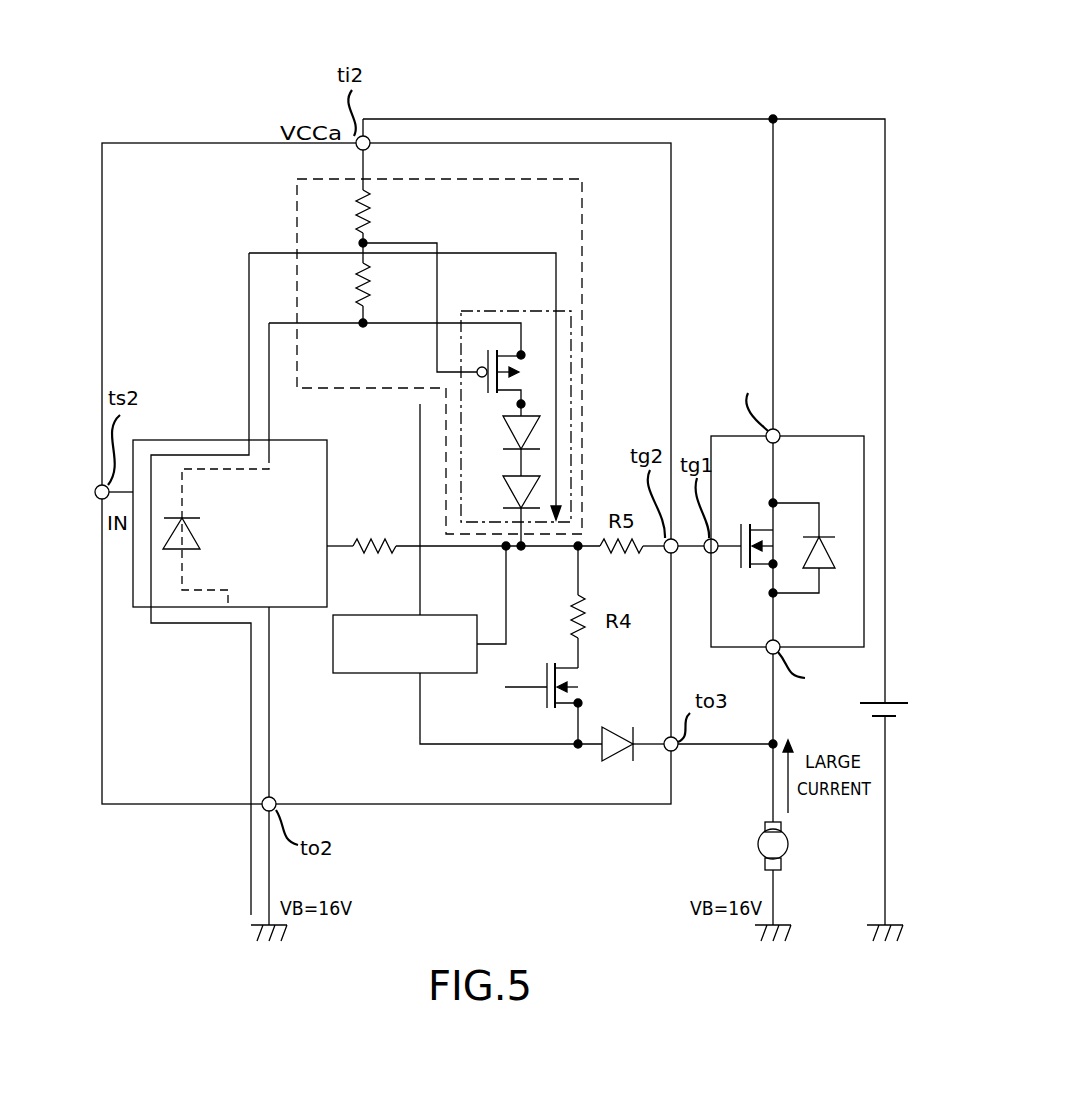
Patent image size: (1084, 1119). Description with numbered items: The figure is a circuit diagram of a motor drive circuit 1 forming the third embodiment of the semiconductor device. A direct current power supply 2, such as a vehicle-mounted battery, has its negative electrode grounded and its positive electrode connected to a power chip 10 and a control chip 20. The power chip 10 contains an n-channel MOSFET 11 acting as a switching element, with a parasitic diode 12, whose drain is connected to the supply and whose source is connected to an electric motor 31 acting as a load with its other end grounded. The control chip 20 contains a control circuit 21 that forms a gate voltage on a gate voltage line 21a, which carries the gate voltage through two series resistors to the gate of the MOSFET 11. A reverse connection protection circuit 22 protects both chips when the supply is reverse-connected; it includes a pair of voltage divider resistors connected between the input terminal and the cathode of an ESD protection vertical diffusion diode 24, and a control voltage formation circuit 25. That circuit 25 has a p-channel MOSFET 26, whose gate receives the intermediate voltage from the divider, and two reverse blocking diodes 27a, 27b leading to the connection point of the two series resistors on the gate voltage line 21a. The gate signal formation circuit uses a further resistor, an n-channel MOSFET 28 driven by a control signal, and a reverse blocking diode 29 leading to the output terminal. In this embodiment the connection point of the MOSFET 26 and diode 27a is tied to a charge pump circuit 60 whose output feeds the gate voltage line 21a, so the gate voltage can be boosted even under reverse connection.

The motor drive circuit 1 is at (664, 104).
The direct current power supply 2 is at (896, 700).
The power chip 10 is at (860, 434).
The n-channel MOSFET 11 is at (740, 572).
The parasitic diode 12 is at (822, 570).
The control chip 20 is at (152, 142).
The control circuit 21 is at (185, 440).
The gate voltage line 21a is at (456, 550).
The reverse connection protection circuit 22 is at (297, 212).
The vertical diffusion diode 24 is at (190, 552).
The control voltage formation circuit 25 is at (528, 314).
The p-channel MOSFET 26 is at (488, 378).
The reverse blocking diode 27a is at (545, 433).
The reverse blocking diode 27b is at (542, 500).
The n-channel MOSFET 28 is at (546, 708).
The reverse blocking diode 29 is at (616, 757).
The electric motor 31 is at (790, 845).
The charge pump circuit 60 is at (356, 675).